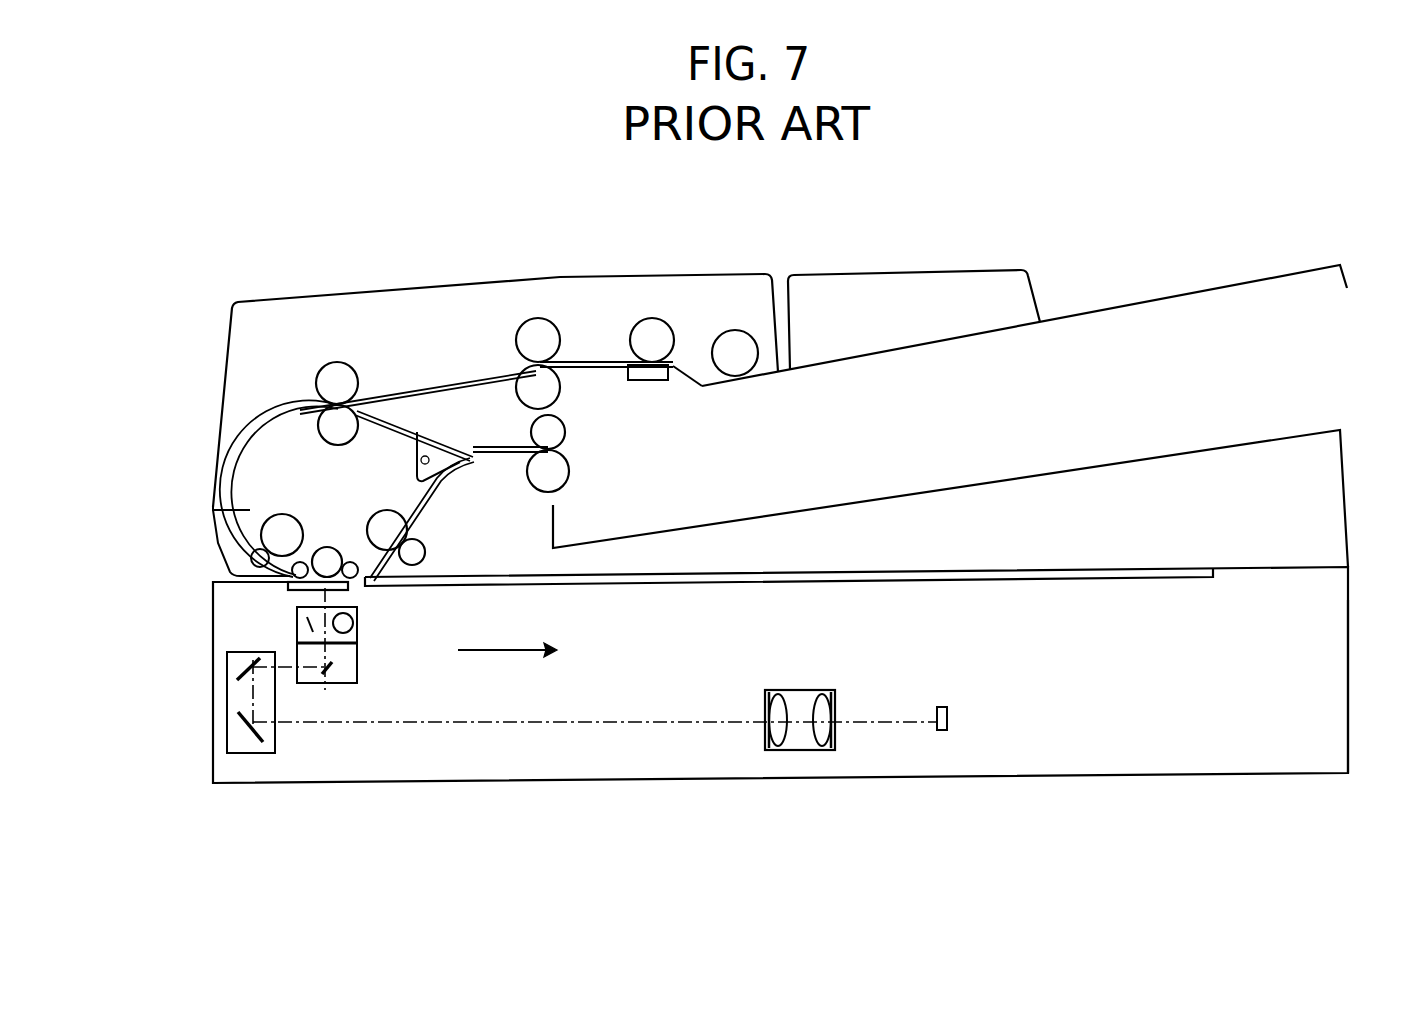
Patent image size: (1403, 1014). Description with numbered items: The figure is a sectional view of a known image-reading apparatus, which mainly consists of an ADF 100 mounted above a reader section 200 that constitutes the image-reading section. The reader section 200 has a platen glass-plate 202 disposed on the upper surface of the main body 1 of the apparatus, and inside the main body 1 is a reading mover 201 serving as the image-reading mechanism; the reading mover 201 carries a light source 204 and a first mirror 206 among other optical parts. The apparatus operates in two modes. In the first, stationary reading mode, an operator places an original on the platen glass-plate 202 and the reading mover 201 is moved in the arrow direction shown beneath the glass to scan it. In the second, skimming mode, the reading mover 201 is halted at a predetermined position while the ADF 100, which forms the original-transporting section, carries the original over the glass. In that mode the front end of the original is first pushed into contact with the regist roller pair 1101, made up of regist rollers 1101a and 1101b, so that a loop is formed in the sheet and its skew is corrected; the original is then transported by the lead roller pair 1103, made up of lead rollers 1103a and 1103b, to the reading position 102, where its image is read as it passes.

The main body 1 is at (1349, 686).
The ADF 100 is at (872, 268).
The reading position 102 is at (335, 592).
The reader section 200 is at (1108, 775).
The reading mover 201 is at (357, 667).
The platen glass-plate 202 is at (593, 583).
The light source 204 is at (354, 626).
The first mirror 206 is at (328, 677).
The regist roller pair 1101 is at (411, 367).
The regist roller 1101a is at (340, 361).
The regist roller 1101b is at (358, 418).
The lead roller pair 1103 is at (171, 530).
The lead roller 1103a is at (214, 510).
The lead roller 1103b is at (251, 559).